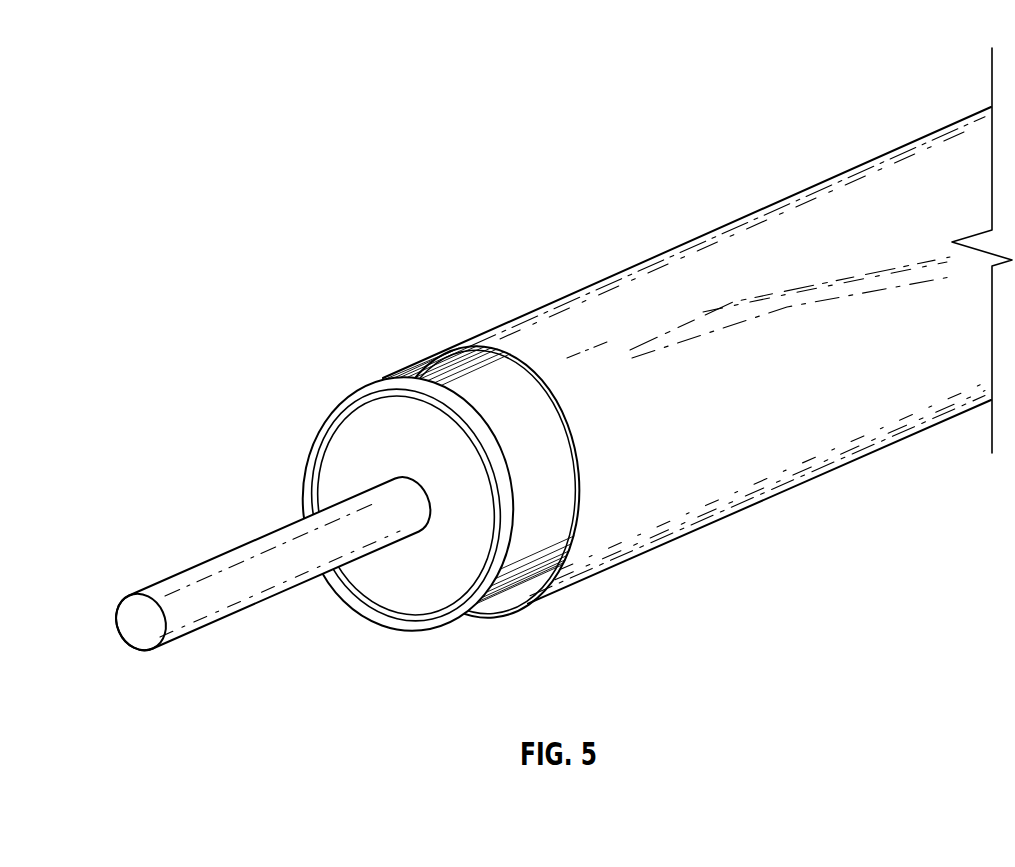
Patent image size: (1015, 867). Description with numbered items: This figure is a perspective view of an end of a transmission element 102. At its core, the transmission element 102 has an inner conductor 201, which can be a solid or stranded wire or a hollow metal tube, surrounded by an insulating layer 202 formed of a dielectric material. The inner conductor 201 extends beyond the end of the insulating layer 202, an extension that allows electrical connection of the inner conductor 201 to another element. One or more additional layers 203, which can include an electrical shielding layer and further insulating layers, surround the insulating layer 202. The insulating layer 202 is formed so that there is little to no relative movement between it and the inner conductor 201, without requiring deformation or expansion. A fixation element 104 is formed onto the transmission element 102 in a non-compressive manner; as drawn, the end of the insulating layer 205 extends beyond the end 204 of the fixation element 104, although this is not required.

The fixation element 104 is at (817, 253).
The transmission element 102 is at (450, 490).
The inner conductor 201 is at (217, 555).
The insulating layer 202 is at (372, 452).
The additional layers 203 is at (550, 518).
The end of the fixation element 204 is at (570, 452).
The end of the insulating layer 205 is at (435, 622).